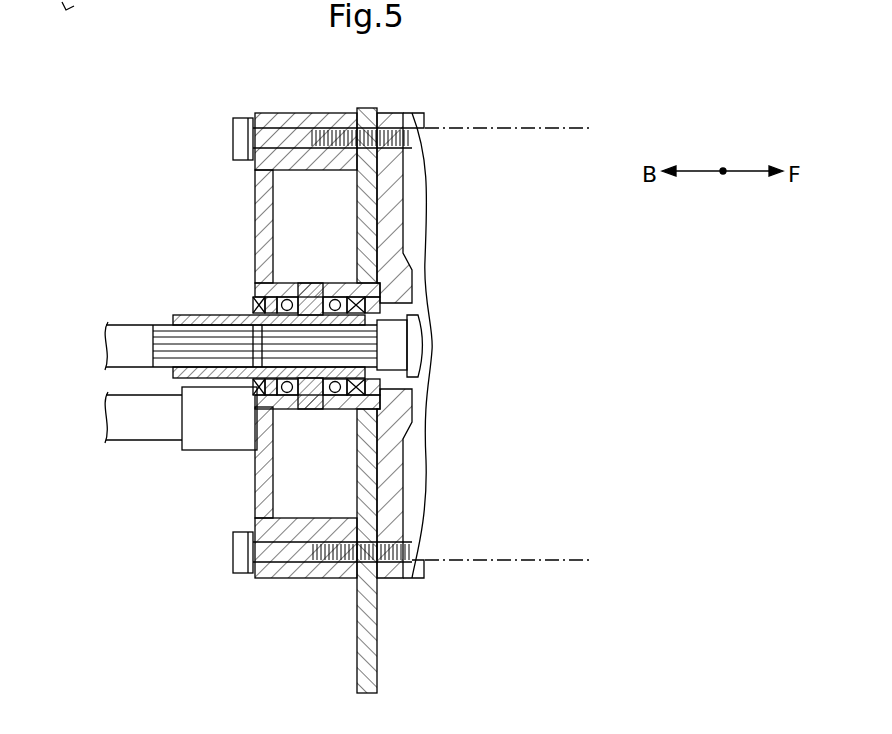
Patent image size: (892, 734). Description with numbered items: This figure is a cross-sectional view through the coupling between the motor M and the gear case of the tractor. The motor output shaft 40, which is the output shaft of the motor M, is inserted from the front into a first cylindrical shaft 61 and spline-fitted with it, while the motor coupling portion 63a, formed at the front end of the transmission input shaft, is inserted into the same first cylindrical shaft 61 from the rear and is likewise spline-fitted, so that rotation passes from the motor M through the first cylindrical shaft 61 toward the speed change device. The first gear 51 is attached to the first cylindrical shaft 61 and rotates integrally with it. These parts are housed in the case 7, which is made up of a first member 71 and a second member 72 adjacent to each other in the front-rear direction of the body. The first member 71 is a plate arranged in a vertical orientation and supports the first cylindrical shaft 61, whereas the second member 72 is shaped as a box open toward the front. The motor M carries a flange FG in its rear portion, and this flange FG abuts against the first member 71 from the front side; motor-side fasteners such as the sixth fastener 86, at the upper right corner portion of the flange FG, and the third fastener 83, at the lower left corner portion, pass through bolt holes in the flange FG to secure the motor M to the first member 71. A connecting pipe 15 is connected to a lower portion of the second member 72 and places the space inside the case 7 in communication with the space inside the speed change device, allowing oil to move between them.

The case 7 is at (326, 328).
The second member 72 is at (257, 218).
The first member 71 is at (357, 605).
The sixth fastener 86 is at (237, 138).
The third fastener 83 is at (237, 554).
The motor coupling portion 63a is at (125, 325).
The first cylindrical shaft 61 is at (227, 313).
The first gear 51 is at (320, 283).
The motor output shaft 40 is at (365, 340).
The connecting pipe 15 is at (147, 433).
The flange FG is at (397, 113).
The motor M is at (547, 127).